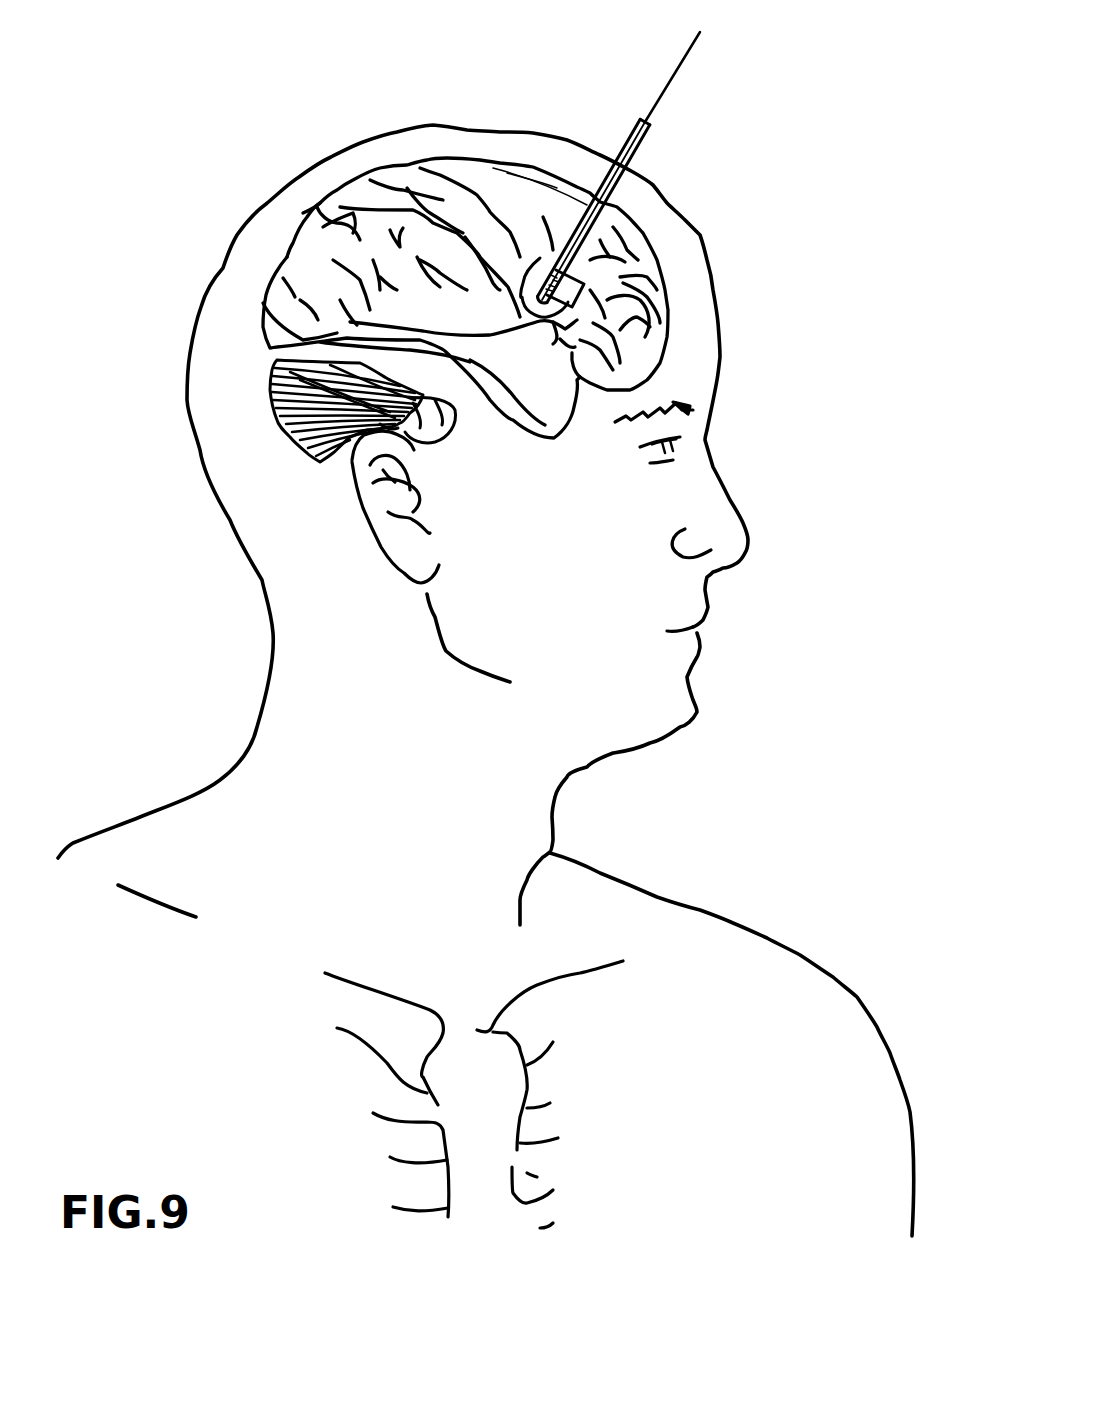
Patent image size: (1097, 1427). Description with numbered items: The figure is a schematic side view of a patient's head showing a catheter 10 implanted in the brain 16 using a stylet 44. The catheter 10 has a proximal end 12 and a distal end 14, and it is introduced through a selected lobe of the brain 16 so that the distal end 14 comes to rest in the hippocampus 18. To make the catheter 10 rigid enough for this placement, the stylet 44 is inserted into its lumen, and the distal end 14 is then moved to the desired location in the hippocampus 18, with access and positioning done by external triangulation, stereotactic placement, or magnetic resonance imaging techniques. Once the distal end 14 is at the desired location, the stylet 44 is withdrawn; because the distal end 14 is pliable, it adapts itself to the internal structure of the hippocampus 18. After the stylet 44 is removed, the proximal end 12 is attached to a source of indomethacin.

The catheter 10 is at (653, 150).
The proximal end 12 is at (633, 105).
The distal end 14 is at (540, 300).
The brain 16 is at (447, 232).
The hippocampus 18 is at (582, 290).
The stylet 44 is at (677, 73).